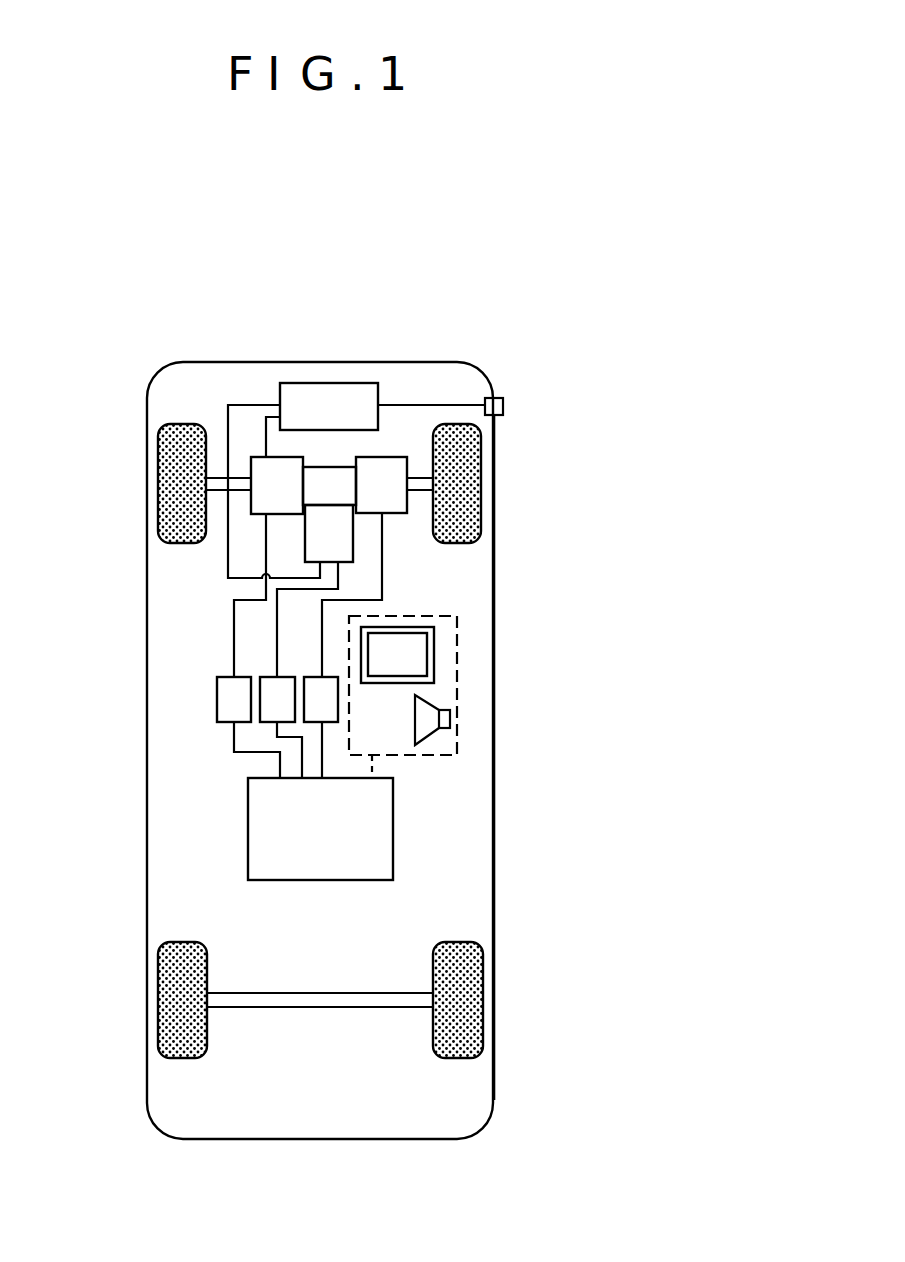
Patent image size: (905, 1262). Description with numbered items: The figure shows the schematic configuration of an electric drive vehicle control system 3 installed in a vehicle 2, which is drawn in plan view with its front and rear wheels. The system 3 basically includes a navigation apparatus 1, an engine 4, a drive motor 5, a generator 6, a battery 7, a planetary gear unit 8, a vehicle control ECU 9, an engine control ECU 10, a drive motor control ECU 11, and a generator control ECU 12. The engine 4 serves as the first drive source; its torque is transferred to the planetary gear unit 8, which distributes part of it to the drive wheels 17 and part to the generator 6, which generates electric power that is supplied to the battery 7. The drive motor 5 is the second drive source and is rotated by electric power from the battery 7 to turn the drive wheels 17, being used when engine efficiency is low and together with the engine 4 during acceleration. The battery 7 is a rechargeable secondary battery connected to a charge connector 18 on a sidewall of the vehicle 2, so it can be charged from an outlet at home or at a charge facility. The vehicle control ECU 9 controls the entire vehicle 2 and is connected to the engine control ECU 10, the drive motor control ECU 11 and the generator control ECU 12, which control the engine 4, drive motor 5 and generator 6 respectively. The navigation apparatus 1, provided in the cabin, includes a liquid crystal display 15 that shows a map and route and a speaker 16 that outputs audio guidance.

The navigation apparatus 1 is at (458, 687).
The vehicle 2 is at (167, 802).
The electric drive vehicle control system 3 is at (177, 859).
The engine 4 is at (397, 505).
The drive motor 5 is at (348, 550).
The generator 6 is at (260, 503).
The battery 7 is at (352, 390).
The planetary gear unit 8 is at (343, 478).
The vehicle control ECU 9 is at (380, 833).
The engine control ECU 10 is at (317, 687).
The drive motor control ECU 11 is at (273, 685).
The generator control ECU 12 is at (230, 685).
The liquid crystal display 15 is at (418, 648).
The speaker 16 is at (423, 728).
The drive wheels 17 is at (465, 480).
The charge connector 18 is at (503, 405).